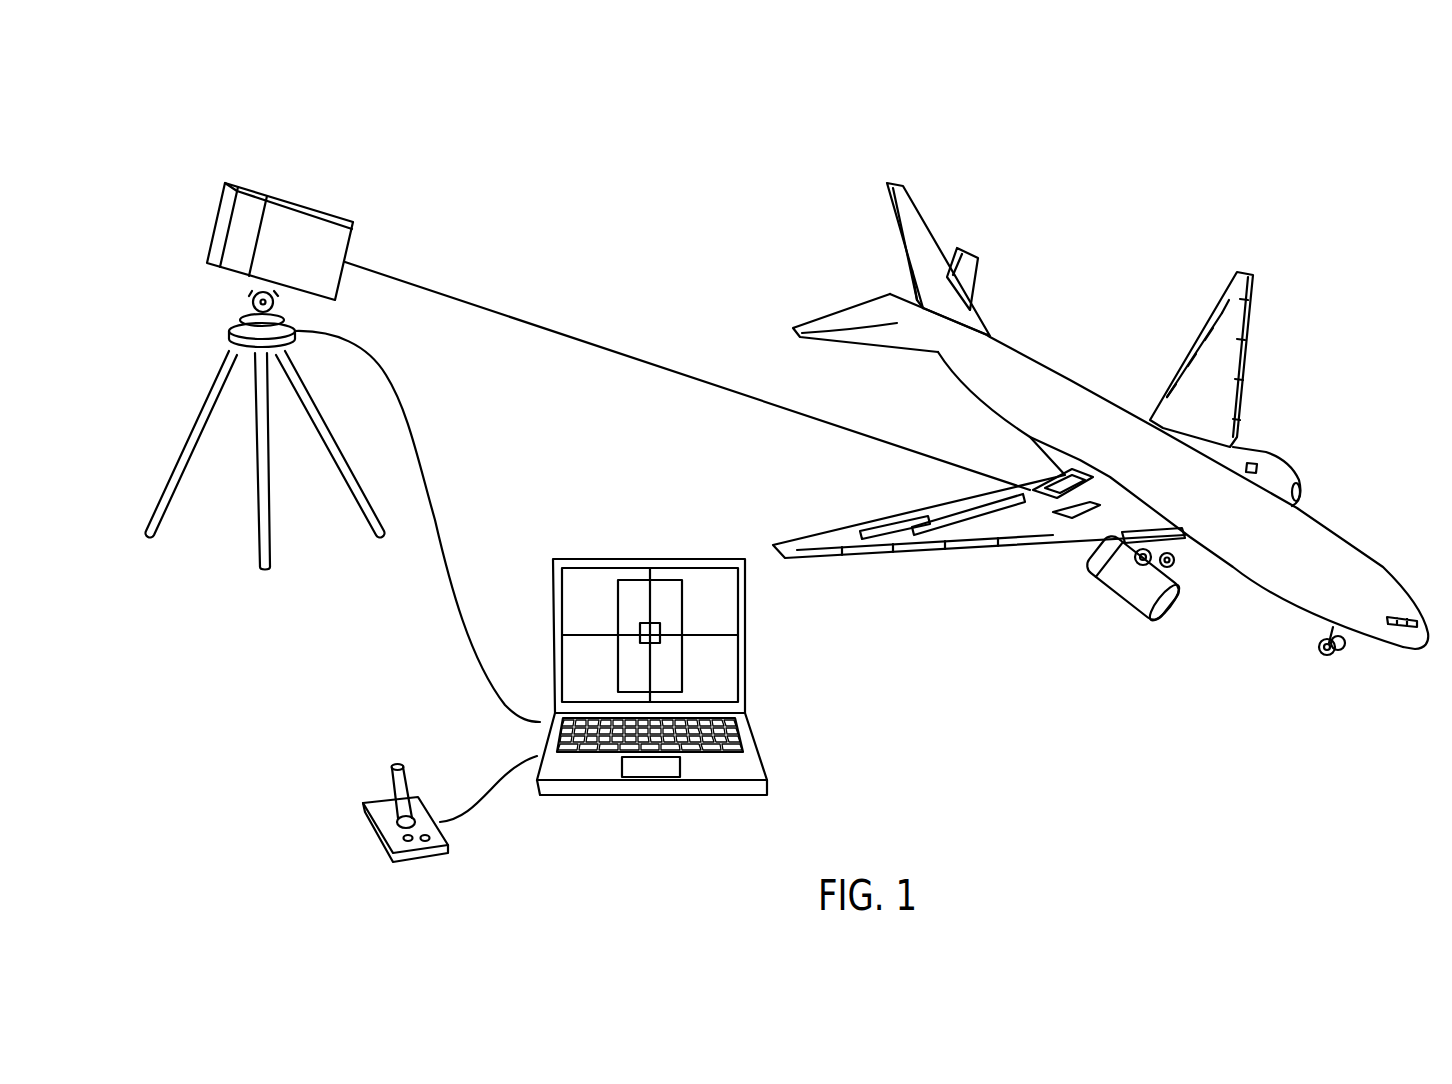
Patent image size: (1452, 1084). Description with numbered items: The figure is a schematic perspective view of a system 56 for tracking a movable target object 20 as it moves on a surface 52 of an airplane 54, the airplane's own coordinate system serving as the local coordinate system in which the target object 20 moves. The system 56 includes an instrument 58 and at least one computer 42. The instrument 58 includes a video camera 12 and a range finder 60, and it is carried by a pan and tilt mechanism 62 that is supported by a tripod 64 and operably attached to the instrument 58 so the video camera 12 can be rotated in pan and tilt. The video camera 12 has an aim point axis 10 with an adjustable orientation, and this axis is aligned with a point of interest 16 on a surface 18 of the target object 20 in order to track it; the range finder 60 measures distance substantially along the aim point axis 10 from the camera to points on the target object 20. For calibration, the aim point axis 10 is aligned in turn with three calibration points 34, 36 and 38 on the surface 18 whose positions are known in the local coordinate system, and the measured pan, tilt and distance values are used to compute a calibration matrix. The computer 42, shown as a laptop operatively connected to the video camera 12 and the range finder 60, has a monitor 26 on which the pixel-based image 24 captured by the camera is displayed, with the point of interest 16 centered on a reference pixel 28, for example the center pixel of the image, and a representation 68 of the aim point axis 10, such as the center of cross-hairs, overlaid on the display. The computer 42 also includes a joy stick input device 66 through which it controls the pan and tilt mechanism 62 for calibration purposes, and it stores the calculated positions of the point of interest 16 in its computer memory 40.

The aim point axis 10 is at (655, 362).
The video camera 12 is at (255, 227).
The point of interest 16 is at (1080, 500).
The surface 18 is at (1071, 524).
The target object 20 is at (979, 529).
The pixel-based image 24 is at (667, 572).
The monitor 26 is at (650, 602).
The reference pixel 28 is at (663, 640).
The calibration point 34 is at (1027, 363).
The calibration point 36 is at (855, 335).
The calibration point 38 is at (910, 220).
The computer memory 40 is at (677, 649).
The computer 42 is at (582, 711).
The surface of airplane 52 is at (1210, 373).
The airplane 54 is at (1100, 419).
The system 56 is at (257, 497).
The instrument 58 is at (255, 203).
The range finder 60 is at (223, 213).
The pan and tilt mechanism 62 is at (237, 313).
The tripod 64 is at (187, 440).
The joy stick input device 66 is at (380, 803).
The representation of aim point axis 68 is at (643, 633).